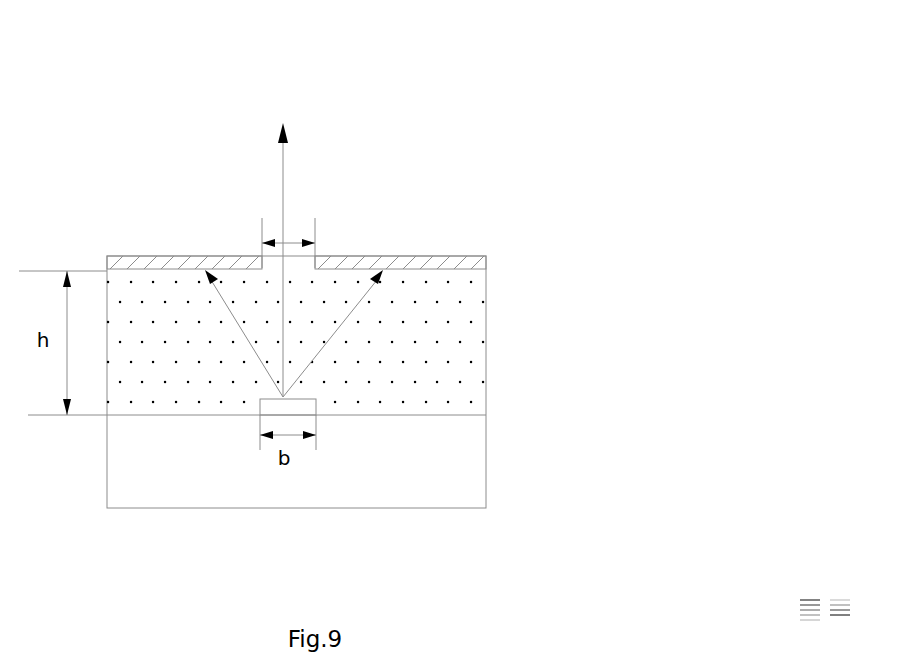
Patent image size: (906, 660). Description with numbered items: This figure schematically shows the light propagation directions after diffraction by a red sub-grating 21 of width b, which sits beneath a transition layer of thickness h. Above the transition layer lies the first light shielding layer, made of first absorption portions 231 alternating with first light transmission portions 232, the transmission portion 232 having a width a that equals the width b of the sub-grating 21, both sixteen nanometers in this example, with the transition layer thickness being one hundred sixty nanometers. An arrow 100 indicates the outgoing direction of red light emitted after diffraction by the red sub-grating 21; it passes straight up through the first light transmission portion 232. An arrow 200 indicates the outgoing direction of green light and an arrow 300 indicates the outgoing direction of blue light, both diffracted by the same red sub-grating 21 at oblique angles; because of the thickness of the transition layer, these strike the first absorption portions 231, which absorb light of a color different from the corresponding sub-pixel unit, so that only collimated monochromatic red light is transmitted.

The arrow indicating outgoing direction of red light 100 is at (283, 165).
The arrow indicating outgoing direction of green light 200 is at (240, 329).
The arrow indicating outgoing direction of blue light 300 is at (357, 305).
The sub-grating 21 is at (302, 398).
The first absorption portion 231 is at (428, 255).
The first light transmission portion 232 is at (308, 245).